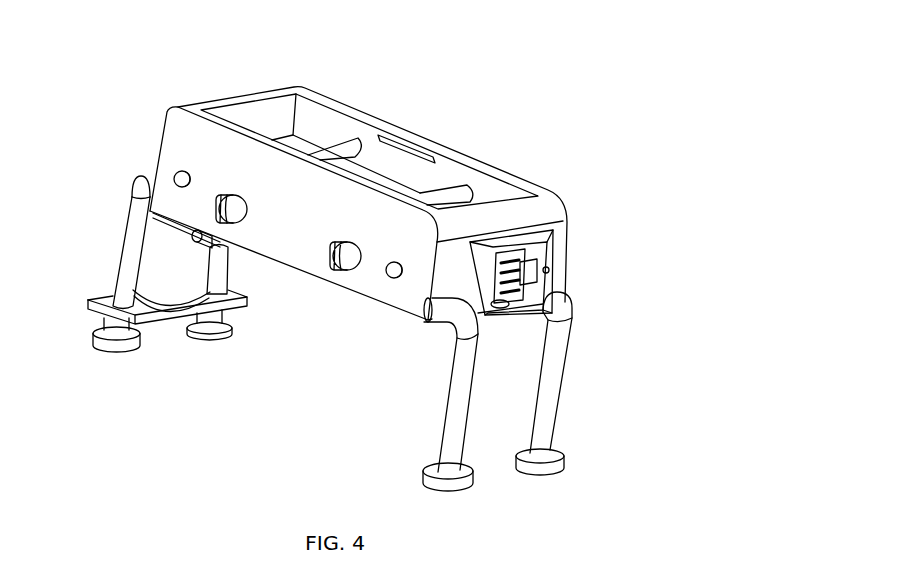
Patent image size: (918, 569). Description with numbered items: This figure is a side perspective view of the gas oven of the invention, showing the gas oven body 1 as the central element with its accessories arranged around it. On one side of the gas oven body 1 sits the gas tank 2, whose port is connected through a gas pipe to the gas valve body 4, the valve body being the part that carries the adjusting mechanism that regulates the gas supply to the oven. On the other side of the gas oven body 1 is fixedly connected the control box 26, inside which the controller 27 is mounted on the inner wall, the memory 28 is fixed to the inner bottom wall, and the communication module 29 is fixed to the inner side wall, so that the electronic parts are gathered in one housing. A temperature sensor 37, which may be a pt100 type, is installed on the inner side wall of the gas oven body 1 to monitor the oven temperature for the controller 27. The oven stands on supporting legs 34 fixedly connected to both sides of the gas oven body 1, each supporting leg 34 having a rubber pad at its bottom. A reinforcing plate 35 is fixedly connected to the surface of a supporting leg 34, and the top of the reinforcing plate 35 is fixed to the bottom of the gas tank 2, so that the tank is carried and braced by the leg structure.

The gas oven body 1 is at (422, 322).
The gas tank 2 is at (153, 273).
The gas valve body 4 is at (200, 232).
The control box 26 is at (549, 270).
The controller 27 is at (497, 257).
The memory 28 is at (572, 317).
The communication module 29 is at (537, 268).
The supporting leg 34 is at (465, 343).
The reinforcing plate 35 is at (112, 298).
The temperature sensor 37 is at (412, 148).